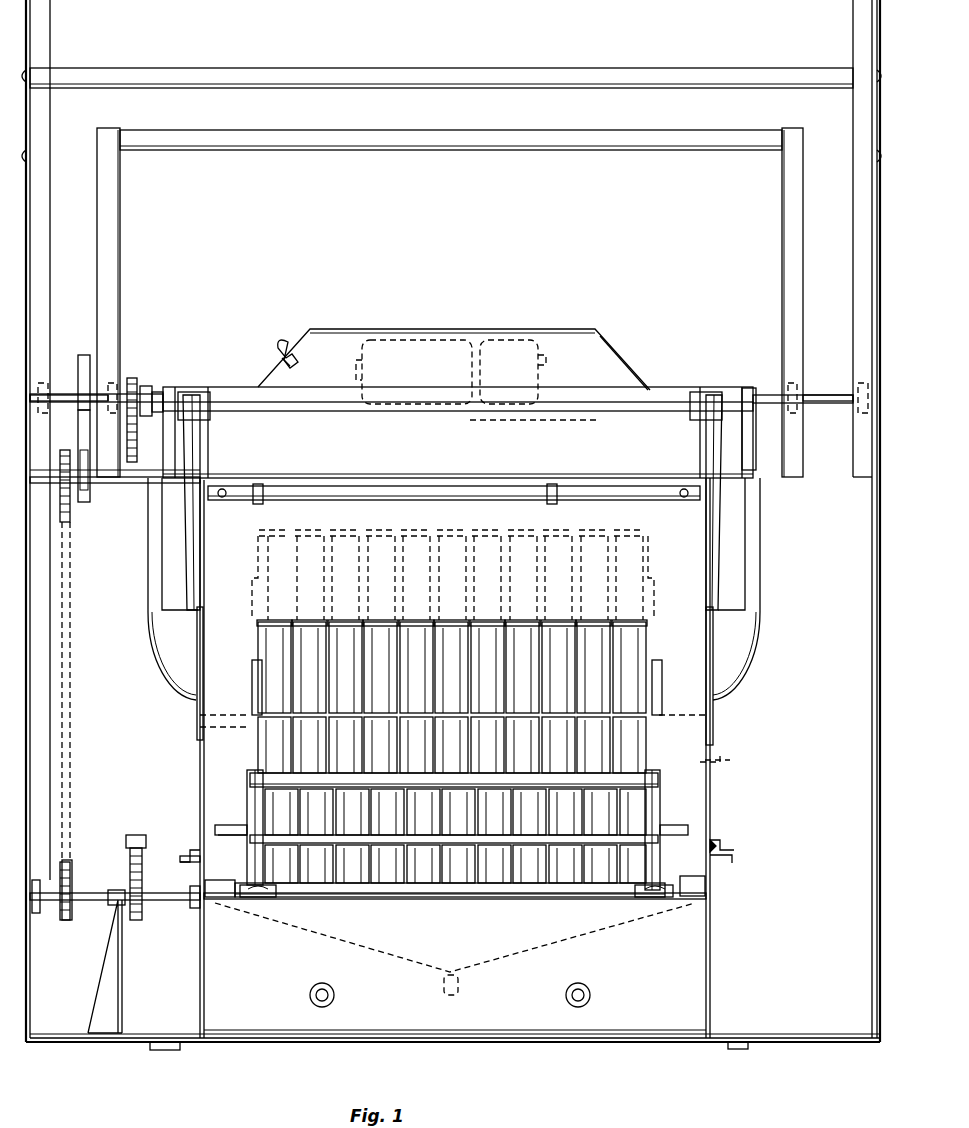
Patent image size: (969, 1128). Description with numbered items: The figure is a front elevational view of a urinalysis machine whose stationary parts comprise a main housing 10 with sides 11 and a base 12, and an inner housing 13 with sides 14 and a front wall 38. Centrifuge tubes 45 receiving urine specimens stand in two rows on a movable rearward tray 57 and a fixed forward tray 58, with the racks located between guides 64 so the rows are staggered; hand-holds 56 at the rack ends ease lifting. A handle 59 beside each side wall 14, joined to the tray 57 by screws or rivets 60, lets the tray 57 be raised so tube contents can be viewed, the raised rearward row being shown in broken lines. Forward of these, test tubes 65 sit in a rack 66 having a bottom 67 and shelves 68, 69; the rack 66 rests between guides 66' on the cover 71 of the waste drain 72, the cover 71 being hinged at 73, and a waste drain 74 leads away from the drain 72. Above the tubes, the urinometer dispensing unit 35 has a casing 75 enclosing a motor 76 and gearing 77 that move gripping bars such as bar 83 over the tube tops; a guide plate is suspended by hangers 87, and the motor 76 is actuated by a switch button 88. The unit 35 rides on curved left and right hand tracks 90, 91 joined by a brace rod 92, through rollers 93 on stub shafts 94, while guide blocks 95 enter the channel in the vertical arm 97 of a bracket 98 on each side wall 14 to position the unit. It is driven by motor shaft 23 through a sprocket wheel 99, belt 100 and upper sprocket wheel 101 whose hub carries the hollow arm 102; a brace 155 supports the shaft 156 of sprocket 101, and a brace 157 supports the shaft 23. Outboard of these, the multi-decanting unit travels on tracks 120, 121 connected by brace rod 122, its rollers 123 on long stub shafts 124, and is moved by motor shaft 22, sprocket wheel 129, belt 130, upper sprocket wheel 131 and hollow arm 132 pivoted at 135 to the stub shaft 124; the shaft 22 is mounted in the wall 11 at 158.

The main housing 10 is at (294, 1044).
The sides 11 is at (26, 161).
The base 12 is at (648, 1040).
The inner housing 13 is at (718, 912).
The sides 14 is at (736, 790).
The motor shaft 22 is at (90, 900).
The motor shaft 23 is at (168, 894).
The urinometer dispensing unit 35 is at (503, 326).
The front wall 38 is at (708, 698).
The centrifuge tubes 45 is at (454, 530).
The hand-holds 56 is at (252, 596).
The rearward tray 57 is at (244, 746).
The forward tray 58 is at (198, 826).
The handle 59 is at (182, 852).
The screws or rivets 60 is at (716, 844).
The guides 64 is at (236, 836).
The test tubes 65 is at (602, 728).
The rack 66 is at (669, 825).
The guides 66' is at (485, 912).
The bottom 67 is at (520, 882).
The shelf 68 is at (624, 842).
The shelf 69 is at (633, 778).
The cover 71 is at (446, 896).
The waste drain 72 is at (384, 966).
The hinge mounting 73 is at (272, 896).
The waste drain 74 is at (460, 980).
The casing 75 is at (590, 352).
The motor 76 is at (430, 345).
The gearing 77 is at (548, 386).
The bar 83 is at (488, 492).
The hangers 87 is at (356, 488).
The switch button 88 is at (282, 340).
The left hand track 90 is at (110, 244).
The right hand track 91 is at (784, 197).
The brace rod 92 is at (481, 136).
The rollers 93 is at (114, 364).
The stub shafts 94 is at (760, 378).
The guide blocks 95 is at (156, 380).
The vertical arm 97 is at (148, 572).
The bracket 98 is at (178, 676).
The sprocket wheel 99 is at (134, 920).
The belt 100 is at (132, 834).
The upper sprocket wheel 101 is at (140, 380).
The hollow arm 102 is at (152, 388).
The left hand track 120 is at (38, 220).
The right hand track 121 is at (865, 157).
The brace rod 122 is at (462, 69).
The rollers 123 is at (40, 364).
The stub shafts 124 is at (66, 394).
The sprocket wheel 129 is at (66, 922).
The belt 130 is at (68, 520).
The upper sprocket wheel 131 is at (60, 492).
The hollow arm 132 is at (90, 458).
The pivotal connection 135 is at (86, 383).
The brace or support 155 is at (200, 450).
The shaft 156 is at (298, 414).
The brace or support 157 is at (102, 988).
The mounting 158 is at (40, 912).